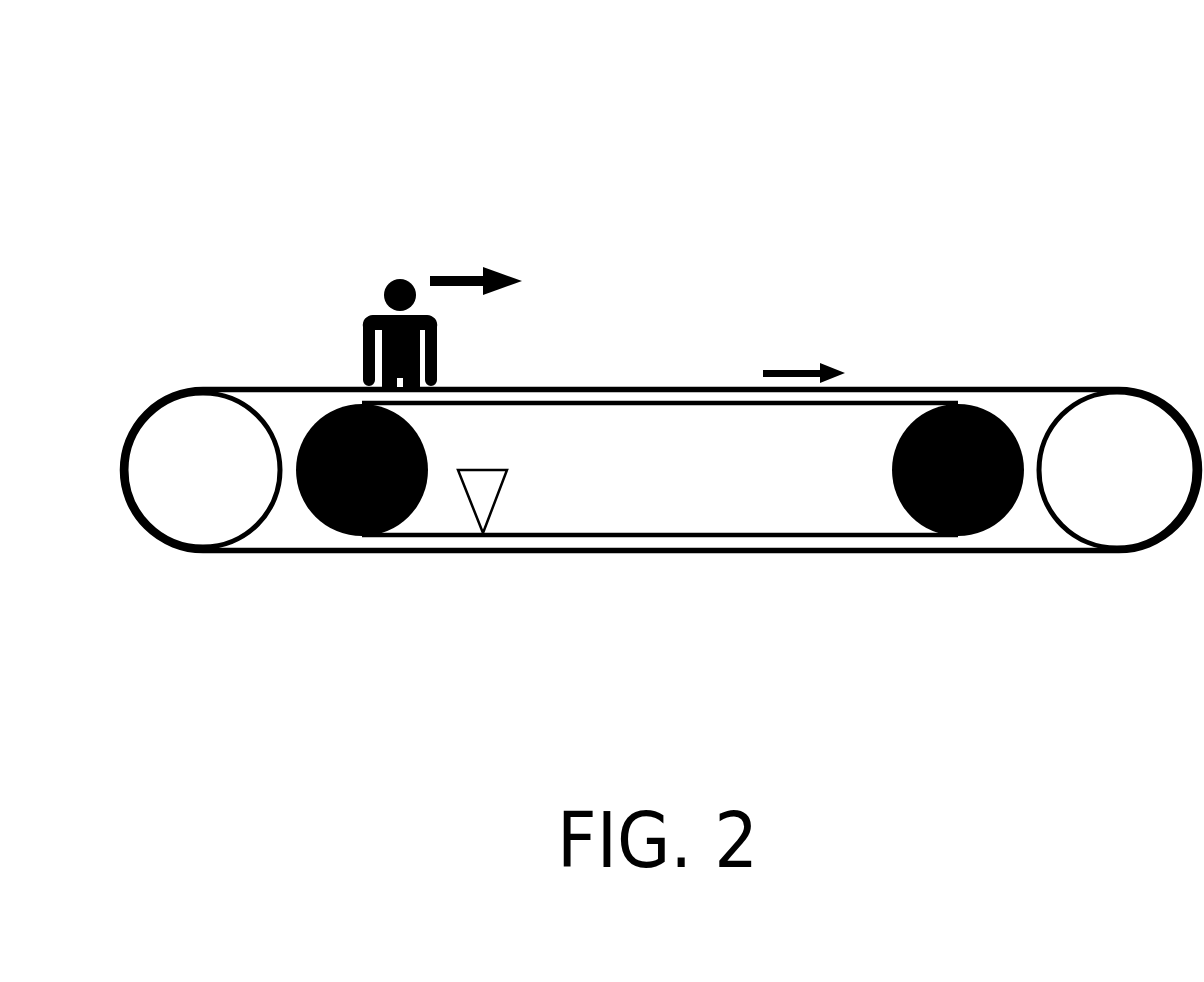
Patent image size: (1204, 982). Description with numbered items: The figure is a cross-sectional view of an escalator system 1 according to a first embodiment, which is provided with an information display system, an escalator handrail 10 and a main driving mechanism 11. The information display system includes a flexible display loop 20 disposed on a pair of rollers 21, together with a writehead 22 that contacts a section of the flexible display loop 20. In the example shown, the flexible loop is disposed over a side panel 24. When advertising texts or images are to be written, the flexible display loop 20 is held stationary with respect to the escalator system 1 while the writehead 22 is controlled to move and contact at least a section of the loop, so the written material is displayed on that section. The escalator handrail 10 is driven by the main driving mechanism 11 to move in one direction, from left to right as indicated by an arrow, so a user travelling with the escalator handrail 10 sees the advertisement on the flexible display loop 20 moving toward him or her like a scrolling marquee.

The escalator system 1 is at (570, 220).
The escalator handrail 10 is at (1047, 383).
The main driving mechanism 11 is at (210, 503).
The flexible display loop 20 is at (683, 397).
The rollers 21 is at (957, 537).
The writehead 22 is at (498, 500).
The side panel 24 is at (295, 420).